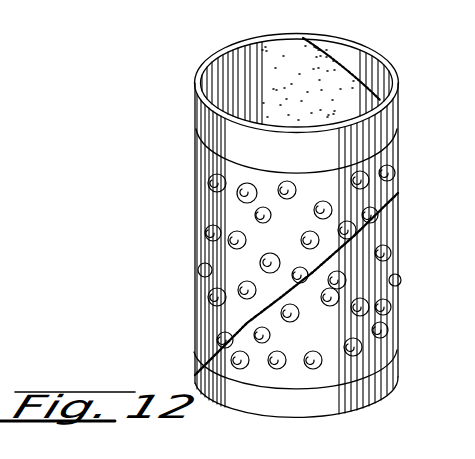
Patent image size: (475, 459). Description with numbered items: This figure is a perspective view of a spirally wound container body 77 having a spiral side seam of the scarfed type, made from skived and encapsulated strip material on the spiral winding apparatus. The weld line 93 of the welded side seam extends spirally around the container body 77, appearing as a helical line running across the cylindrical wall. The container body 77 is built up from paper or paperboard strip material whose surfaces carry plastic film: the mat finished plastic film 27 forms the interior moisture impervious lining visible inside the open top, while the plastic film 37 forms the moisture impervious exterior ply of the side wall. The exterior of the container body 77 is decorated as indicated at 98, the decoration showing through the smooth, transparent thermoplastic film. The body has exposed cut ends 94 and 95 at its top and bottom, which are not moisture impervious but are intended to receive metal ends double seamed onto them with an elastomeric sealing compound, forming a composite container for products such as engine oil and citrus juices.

The mat finished plastic film 27 is at (240, 78).
The plastic film 37 is at (0, 114).
The container body 77 is at (191, 142).
The weld line 93 is at (235, 340).
The exposed cut end 94 is at (385, 66).
The exposed cut end 95 is at (370, 407).
The decoration 98 is at (222, 197).